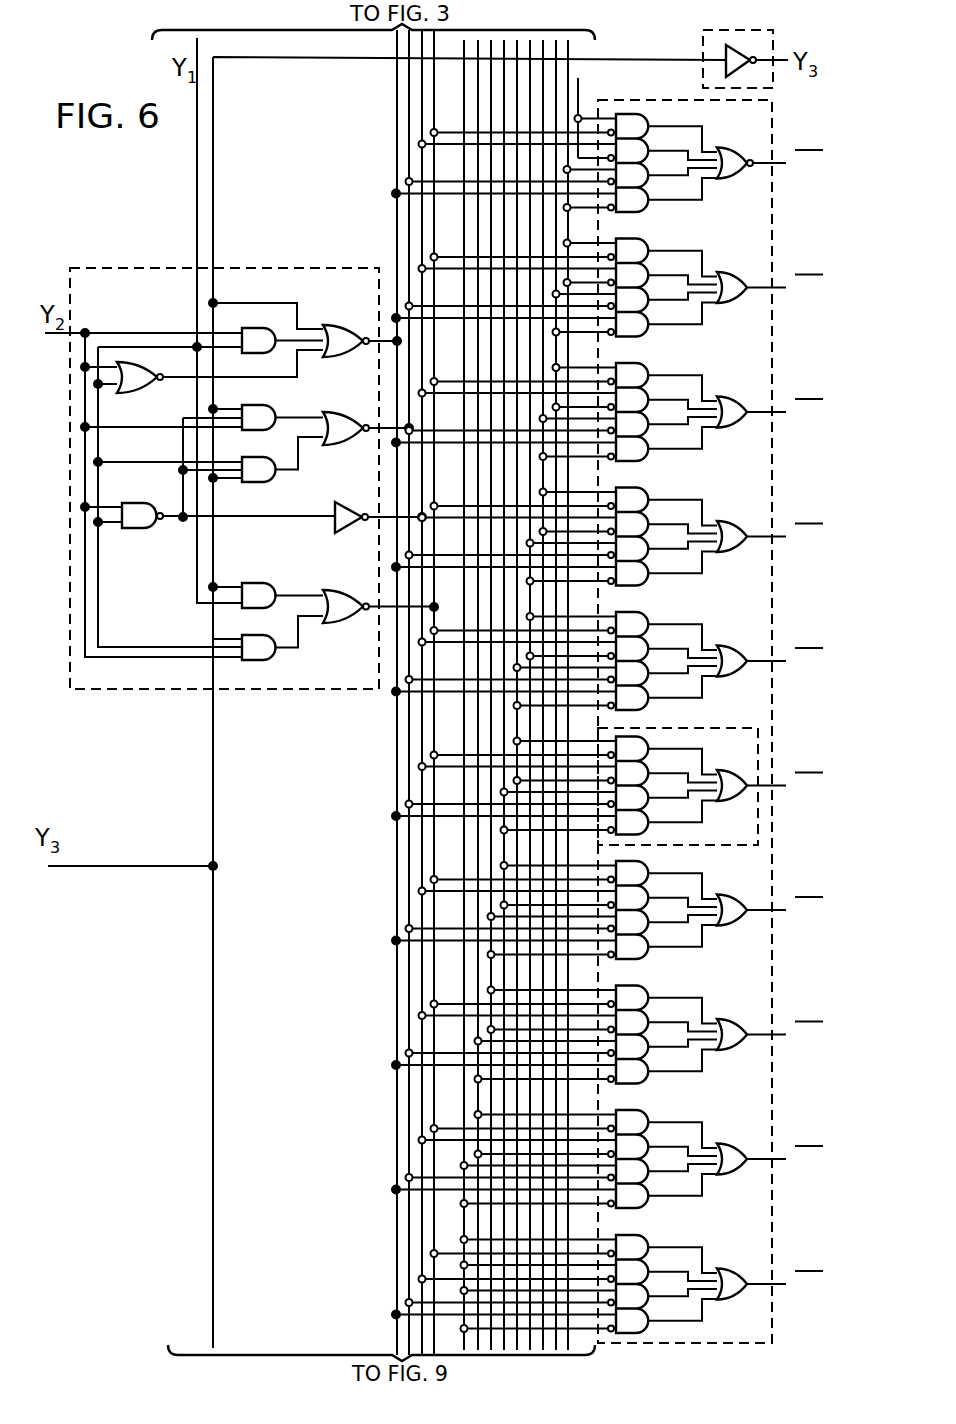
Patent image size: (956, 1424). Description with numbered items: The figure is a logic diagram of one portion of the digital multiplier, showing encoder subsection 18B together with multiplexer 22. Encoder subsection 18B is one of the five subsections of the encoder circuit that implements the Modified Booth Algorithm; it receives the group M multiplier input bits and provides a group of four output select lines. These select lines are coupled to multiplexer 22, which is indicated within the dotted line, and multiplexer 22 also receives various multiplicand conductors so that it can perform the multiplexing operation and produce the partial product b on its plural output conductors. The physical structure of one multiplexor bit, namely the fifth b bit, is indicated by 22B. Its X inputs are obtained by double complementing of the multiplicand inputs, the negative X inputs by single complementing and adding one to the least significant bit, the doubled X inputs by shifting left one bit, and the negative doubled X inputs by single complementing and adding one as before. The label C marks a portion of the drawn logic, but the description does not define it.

The encoder subsection 18B is at (117, 268).
The Booth encoder logic section C is at (323, 451).
The multiplexer circuit 22 is at (607, 709).
The multiplexor bit 22B is at (714, 728).